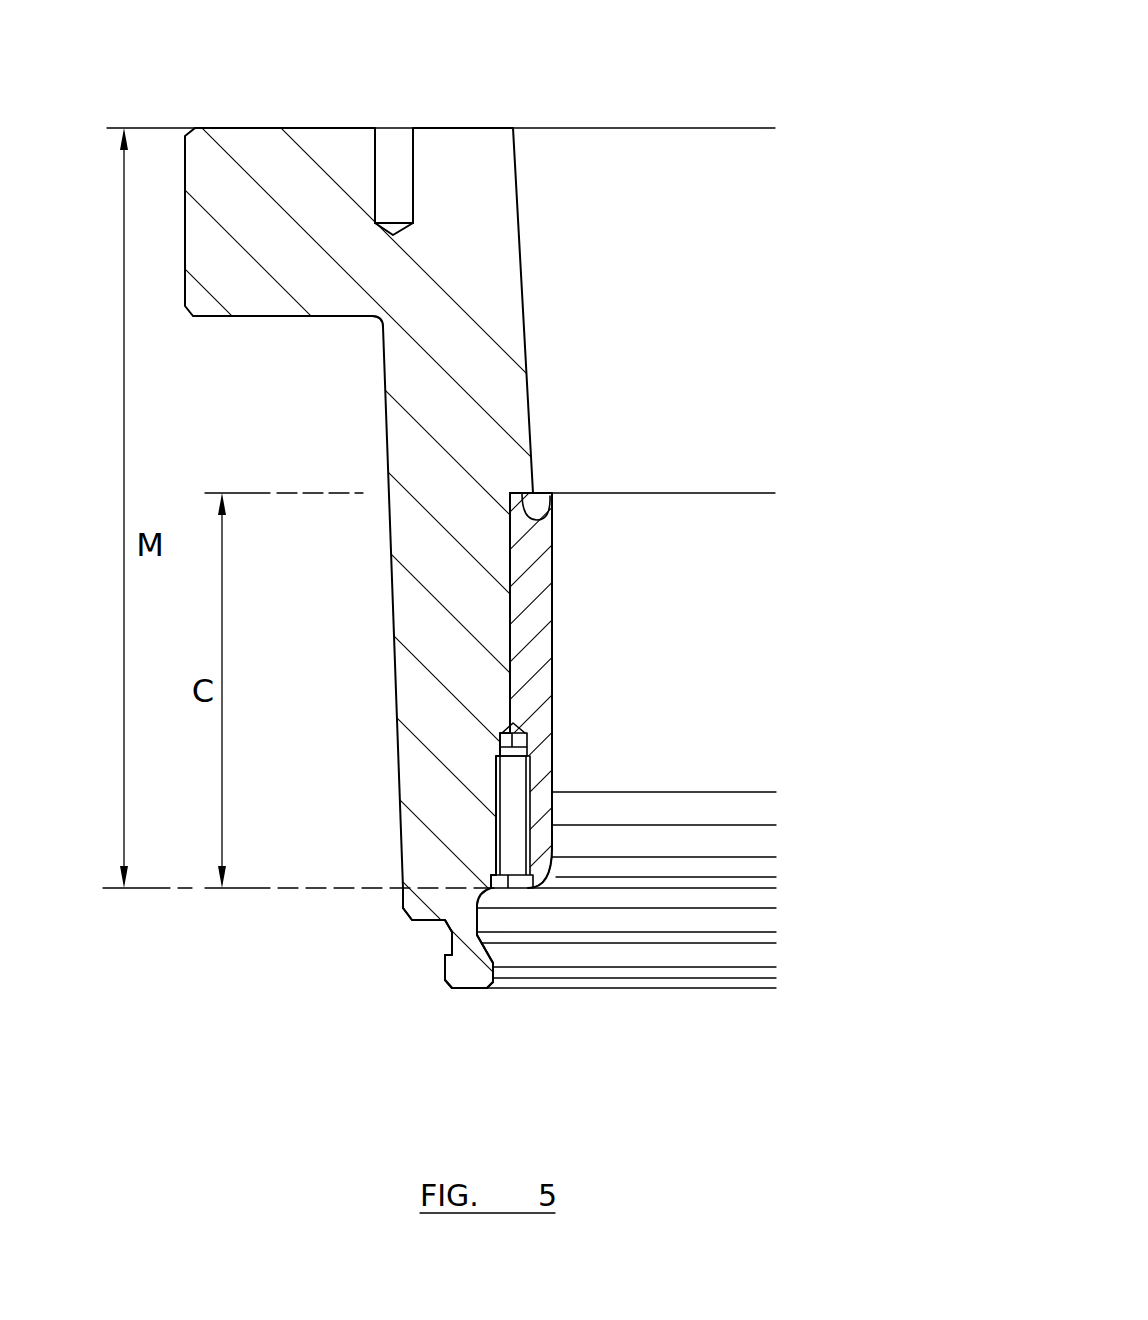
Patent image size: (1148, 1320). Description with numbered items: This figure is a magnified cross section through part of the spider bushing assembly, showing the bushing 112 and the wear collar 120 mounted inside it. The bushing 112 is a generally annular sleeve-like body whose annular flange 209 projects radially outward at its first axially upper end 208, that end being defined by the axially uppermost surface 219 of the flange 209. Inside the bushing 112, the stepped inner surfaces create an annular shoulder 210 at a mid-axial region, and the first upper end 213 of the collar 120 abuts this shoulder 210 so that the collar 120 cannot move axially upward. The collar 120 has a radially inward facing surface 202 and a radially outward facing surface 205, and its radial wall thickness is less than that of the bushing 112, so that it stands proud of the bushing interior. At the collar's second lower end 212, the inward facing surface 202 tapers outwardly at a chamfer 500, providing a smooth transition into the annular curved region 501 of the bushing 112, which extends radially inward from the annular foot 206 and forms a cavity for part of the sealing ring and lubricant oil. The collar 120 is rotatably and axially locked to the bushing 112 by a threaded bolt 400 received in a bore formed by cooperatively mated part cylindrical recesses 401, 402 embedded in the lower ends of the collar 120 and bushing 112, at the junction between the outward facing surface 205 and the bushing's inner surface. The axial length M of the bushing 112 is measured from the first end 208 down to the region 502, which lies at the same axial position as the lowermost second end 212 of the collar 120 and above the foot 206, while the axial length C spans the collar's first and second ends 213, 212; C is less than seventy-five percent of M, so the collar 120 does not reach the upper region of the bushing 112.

The bushing 112 is at (440, 575).
The wear collar 120 is at (534, 610).
The radially inward facing surface of collar 202 is at (557, 847).
The radially outward facing surface of collar 205 is at (504, 642).
The annular foot 206 is at (469, 968).
The first axially upper end of bushing 208 is at (463, 128).
The annular flange 209 is at (257, 287).
The annular shoulder 210 is at (513, 540).
The second lower end of collar 212 is at (712, 887).
The first upper end of collar 213 is at (745, 493).
The axially uppermost surface of flange 219 is at (250, 128).
The threaded bolt 400 is at (512, 790).
The part cylindrical recess of collar 401 is at (527, 735).
The part cylindrical recess of bushing 402 is at (500, 735).
The chamfer 500 is at (548, 873).
The annular curved region 501 is at (557, 960).
The region of bushing 502 is at (792, 887).